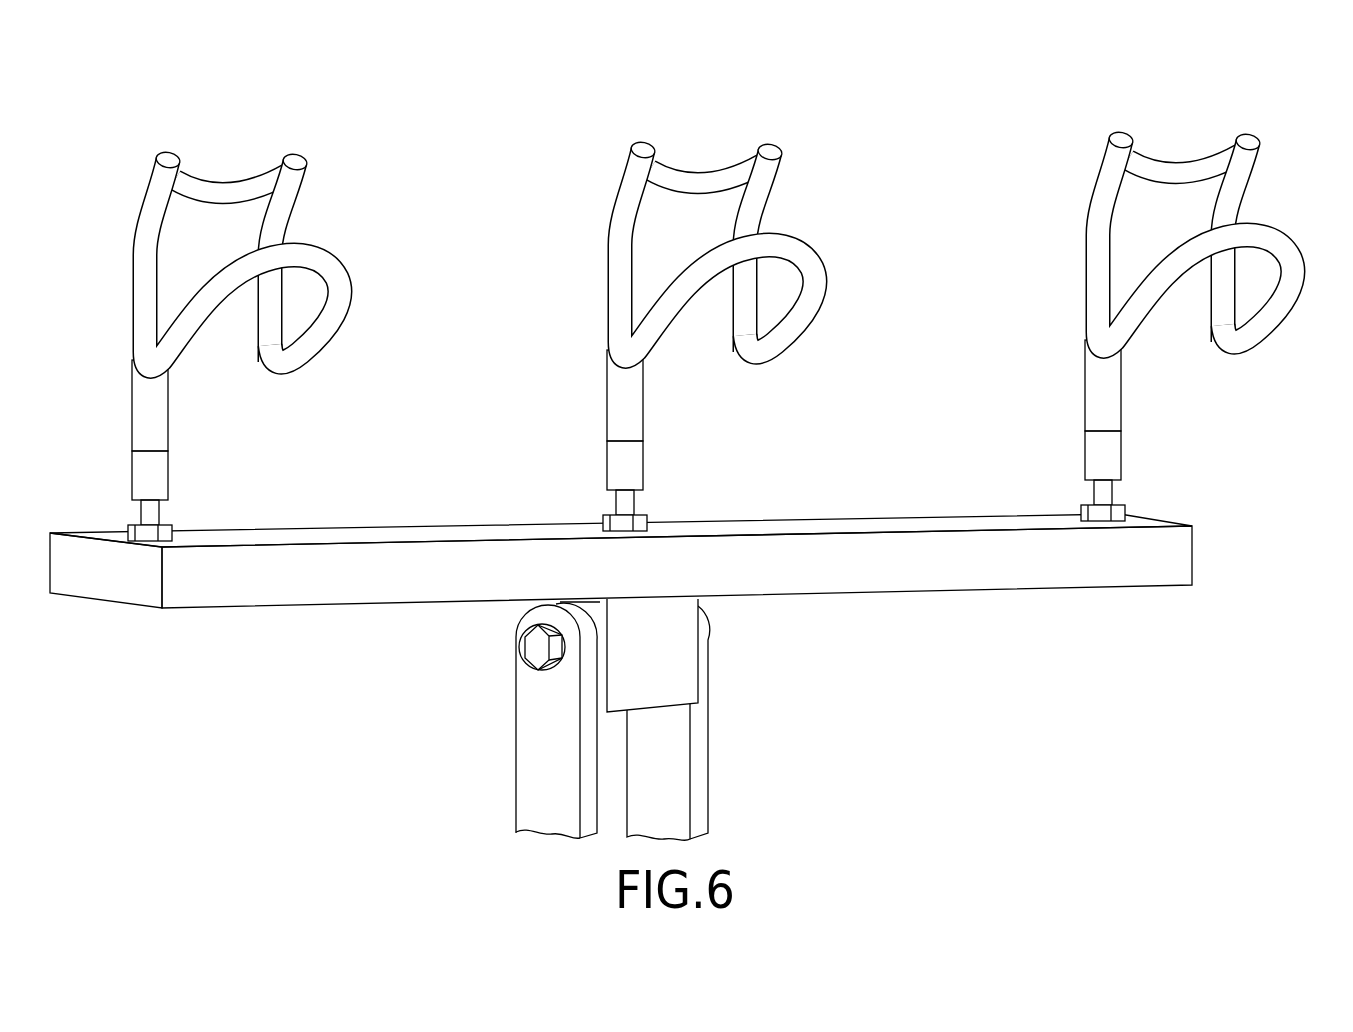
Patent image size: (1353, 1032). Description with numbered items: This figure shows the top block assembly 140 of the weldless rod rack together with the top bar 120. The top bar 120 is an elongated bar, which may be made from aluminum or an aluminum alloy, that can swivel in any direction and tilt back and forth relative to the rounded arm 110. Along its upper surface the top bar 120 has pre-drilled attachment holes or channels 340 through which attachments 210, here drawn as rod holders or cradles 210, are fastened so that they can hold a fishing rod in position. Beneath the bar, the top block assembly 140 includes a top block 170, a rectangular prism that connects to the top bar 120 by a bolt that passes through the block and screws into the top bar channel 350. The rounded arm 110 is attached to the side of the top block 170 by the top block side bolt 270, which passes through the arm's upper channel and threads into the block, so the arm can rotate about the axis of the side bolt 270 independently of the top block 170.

The rounded arm 110 is at (518, 790).
The top bar 120 is at (1068, 582).
The top block assembly 140 is at (623, 742).
The top block 170 is at (685, 638).
The cradle 210 is at (296, 163).
The top block side bolt 270 is at (533, 652).
The attachment holes or channels 340 is at (1118, 511).
The top bar channel 350 is at (580, 603).